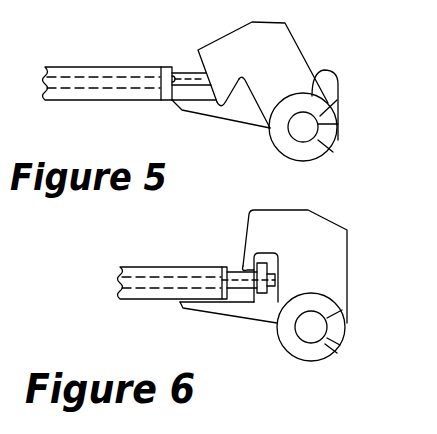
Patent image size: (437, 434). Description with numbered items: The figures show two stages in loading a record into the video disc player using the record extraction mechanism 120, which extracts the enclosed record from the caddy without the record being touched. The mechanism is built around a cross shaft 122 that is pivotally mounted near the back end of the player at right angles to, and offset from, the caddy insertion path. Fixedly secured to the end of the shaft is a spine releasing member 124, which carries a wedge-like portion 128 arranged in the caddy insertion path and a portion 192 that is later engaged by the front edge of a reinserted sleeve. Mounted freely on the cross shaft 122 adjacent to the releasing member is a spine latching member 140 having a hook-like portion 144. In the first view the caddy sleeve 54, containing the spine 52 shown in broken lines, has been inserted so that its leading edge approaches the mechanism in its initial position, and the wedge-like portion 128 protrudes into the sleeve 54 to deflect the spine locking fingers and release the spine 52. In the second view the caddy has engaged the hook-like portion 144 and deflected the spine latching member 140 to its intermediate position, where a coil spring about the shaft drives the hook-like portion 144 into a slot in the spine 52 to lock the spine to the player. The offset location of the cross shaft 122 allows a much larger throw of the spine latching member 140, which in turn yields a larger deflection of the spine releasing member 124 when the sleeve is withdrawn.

In FIG. 5, the sleeve 54 is at (80, 66).
In FIG. 6, the sleeve 54 is at (135, 266).
In FIG. 5, the spine 52 is at (93, 84).
In FIG. 6, the spine 52 is at (147, 283).
In FIG. 5, the wedge-like portion 128 is at (185, 76).
In FIG. 6, the wedge-like portion 128 is at (265, 303).
In FIG. 5, the portion 192 is at (207, 113).
In FIG. 6, the portion 192 is at (221, 314).
In FIG. 5, the record extraction mechanism 120 is at (362, 32).
In FIG. 6, the record extraction mechanism 120 is at (418, 272).
In FIG. 5, the spine latching member 140 is at (291, 67).
In FIG. 6, the spine latching member 140 is at (333, 235).
In FIG. 5, the hook-like portion 144 is at (232, 107).
In FIG. 6, the hook-like portion 144 is at (243, 266).
In FIG. 5, the spine releasing member 124 is at (330, 87).
In FIG. 5, the cross shaft 122 is at (305, 129).
In FIG. 6, the cross shaft 122 is at (312, 331).